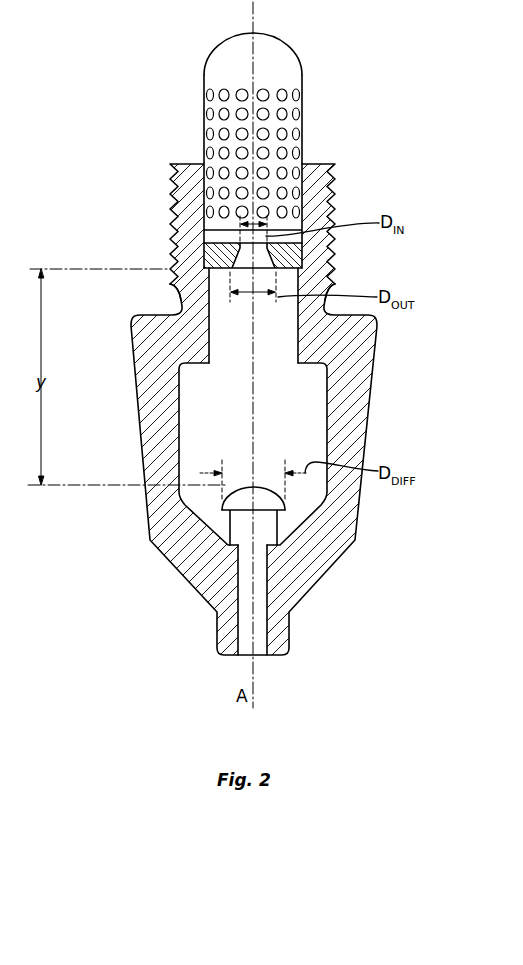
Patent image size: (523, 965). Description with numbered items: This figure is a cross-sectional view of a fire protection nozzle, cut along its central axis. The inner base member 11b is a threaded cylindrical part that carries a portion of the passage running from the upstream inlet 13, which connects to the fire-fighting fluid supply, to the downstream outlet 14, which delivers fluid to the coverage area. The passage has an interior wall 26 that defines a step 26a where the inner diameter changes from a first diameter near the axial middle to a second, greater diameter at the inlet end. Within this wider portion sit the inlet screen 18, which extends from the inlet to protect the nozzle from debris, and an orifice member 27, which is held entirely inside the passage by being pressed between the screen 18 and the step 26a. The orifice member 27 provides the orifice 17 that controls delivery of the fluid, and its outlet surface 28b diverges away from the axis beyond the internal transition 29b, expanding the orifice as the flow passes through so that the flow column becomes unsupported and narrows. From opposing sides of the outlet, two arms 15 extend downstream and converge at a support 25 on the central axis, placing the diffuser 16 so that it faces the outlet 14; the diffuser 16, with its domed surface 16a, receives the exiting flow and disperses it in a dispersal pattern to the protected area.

The inner base member 11b is at (137, 327).
The inlet 13 is at (306, 156).
The outlet 14 is at (293, 431).
The arms 15 is at (341, 535).
The diffuser 16 is at (224, 497).
The deflector dome surface 16a is at (247, 488).
The orifice 17 is at (241, 280).
The inlet screen 18 is at (303, 80).
The support 25 is at (288, 637).
The interior wall 26 is at (211, 222).
The step 26a is at (178, 288).
The orifice member 27 is at (204, 257).
The outlet surface 28b is at (300, 268).
The transition 29b is at (301, 250).